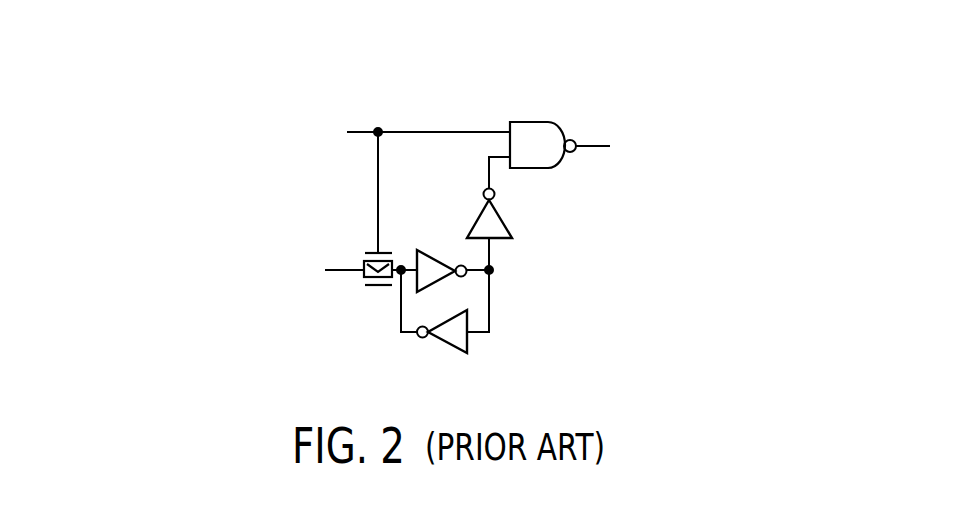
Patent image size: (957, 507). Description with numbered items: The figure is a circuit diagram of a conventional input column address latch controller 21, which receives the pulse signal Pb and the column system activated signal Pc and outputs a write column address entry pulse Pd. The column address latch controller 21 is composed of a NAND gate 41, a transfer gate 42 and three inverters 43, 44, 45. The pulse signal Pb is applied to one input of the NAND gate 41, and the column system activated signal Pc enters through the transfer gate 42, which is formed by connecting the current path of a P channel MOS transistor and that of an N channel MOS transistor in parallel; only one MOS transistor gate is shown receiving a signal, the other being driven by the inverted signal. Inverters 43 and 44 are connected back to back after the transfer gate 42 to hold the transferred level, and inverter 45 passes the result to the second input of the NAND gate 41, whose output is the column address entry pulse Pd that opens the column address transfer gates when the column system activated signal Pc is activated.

The column address latch controller 21 is at (435, 63).
The NAND gate 41 is at (532, 121).
The transfer gate 42 is at (378, 290).
The inverter 43 is at (430, 248).
The inverter 44 is at (442, 341).
The inverter 45 is at (507, 220).